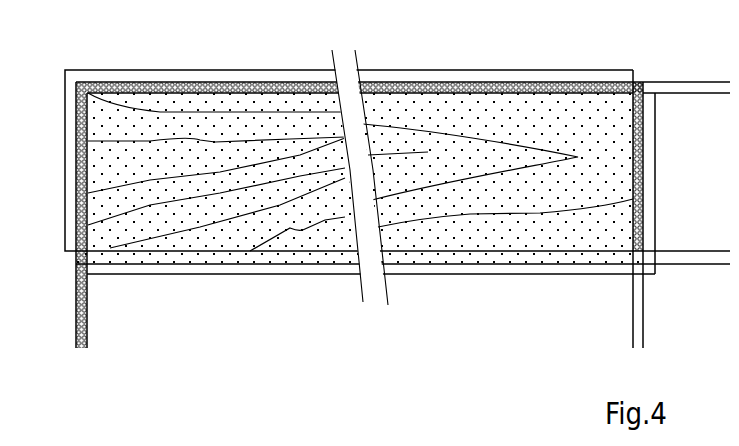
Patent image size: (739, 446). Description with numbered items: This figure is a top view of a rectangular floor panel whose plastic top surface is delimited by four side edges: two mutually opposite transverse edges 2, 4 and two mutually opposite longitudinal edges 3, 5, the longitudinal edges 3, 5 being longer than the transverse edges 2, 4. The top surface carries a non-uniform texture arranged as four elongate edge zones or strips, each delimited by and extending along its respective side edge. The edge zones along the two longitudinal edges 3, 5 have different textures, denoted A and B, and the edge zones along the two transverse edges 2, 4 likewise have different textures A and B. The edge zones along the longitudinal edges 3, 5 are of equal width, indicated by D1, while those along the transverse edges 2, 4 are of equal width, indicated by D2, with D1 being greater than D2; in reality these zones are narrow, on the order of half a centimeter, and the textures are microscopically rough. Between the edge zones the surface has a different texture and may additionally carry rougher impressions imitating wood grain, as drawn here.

The transverse edge 2 is at (640, 185).
The longitudinal edge 3 is at (243, 268).
The transverse edge 4 is at (73, 173).
The longitudinal edge 5 is at (490, 93).
The texture A is at (455, 82).
The texture B is at (87, 140).
The width of edge zones along longitudinal edges D1 is at (712, 118).
The width of edge zones along transverse edges D2 is at (113, 330).